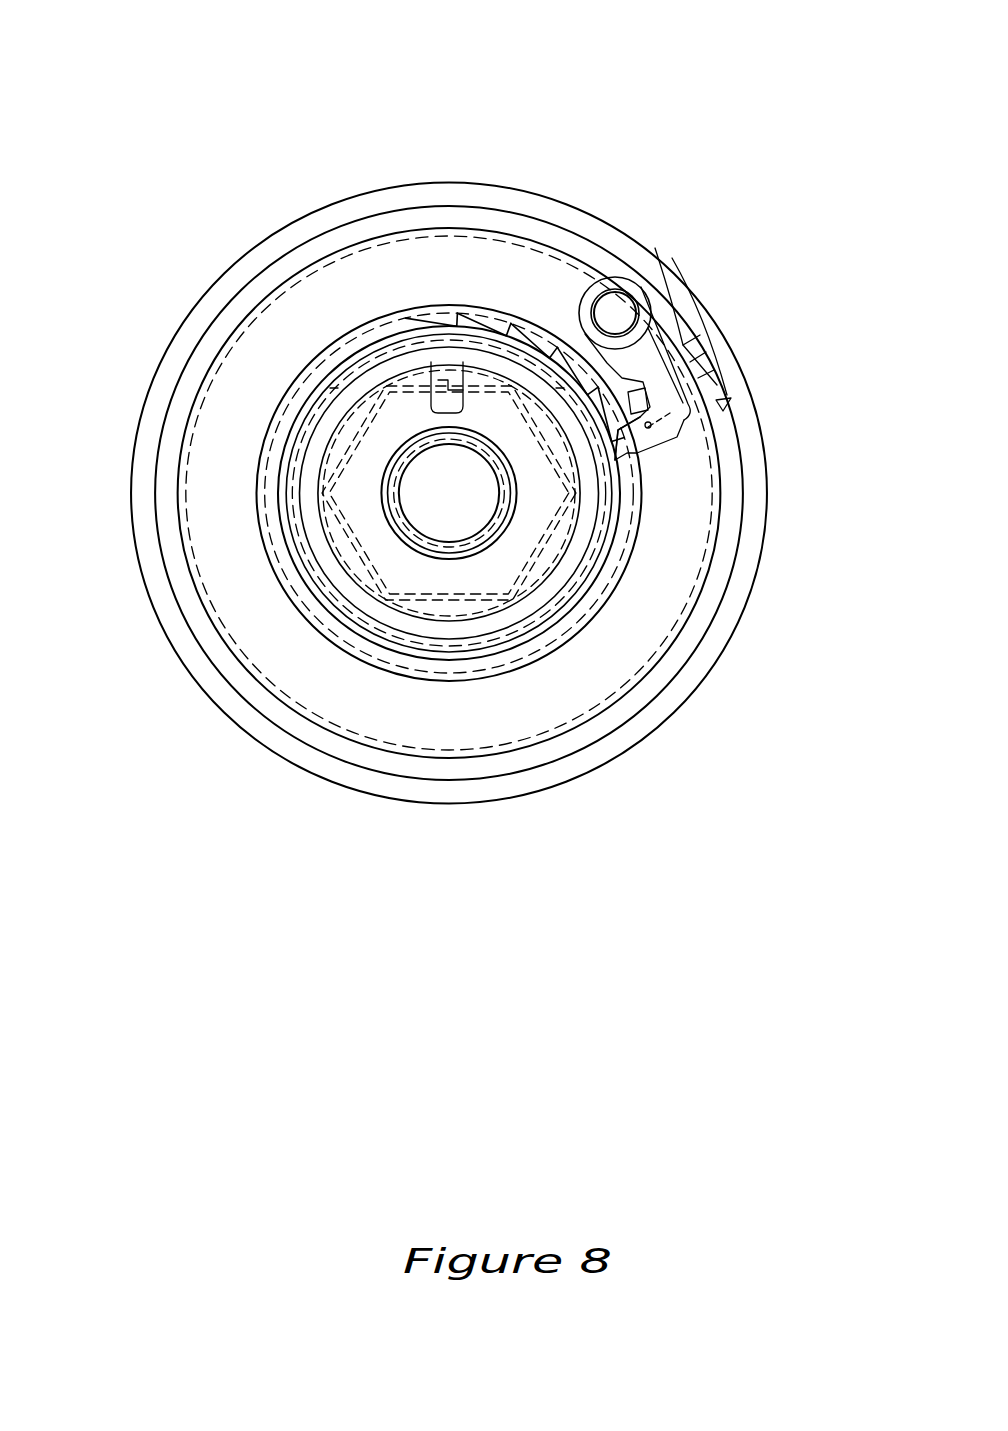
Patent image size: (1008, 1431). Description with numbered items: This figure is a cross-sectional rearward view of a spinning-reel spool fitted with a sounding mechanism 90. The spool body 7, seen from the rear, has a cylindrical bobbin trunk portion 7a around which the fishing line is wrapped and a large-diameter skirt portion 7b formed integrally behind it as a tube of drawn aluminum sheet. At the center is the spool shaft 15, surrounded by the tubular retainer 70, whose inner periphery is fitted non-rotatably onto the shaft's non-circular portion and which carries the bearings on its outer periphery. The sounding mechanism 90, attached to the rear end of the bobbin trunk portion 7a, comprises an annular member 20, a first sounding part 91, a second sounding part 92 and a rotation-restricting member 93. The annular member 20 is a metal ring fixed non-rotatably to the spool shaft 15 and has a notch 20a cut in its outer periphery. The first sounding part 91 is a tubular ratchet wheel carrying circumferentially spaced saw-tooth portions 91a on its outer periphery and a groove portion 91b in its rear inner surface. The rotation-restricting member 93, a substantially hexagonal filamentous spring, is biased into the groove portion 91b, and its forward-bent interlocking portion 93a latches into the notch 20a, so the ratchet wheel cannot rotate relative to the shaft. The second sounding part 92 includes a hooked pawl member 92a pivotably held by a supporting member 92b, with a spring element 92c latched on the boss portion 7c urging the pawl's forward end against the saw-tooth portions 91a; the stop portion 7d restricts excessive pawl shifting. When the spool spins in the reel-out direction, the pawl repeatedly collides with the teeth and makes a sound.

The spool body 7 is at (582, 150).
The bobbin trunk portion 7a is at (418, 232).
The skirt portion 7b is at (468, 206).
The boss portion 7c is at (714, 362).
The stop portion 7d is at (718, 410).
The spool shaft 15 is at (412, 487).
The annular member 20 is at (380, 427).
The notch 20a is at (397, 377).
The retainer 70 is at (390, 509).
The sounding mechanism 90 is at (618, 302).
The first sounding part 91 is at (357, 333).
The saw-tooth portions 91a is at (408, 326).
The groove portion 91b is at (322, 472).
The second sounding part 92 is at (719, 343).
The hooked pawl member 92a is at (630, 456).
The supporting member 92b is at (648, 286).
The spring element 92c is at (680, 318).
The rotation-restricting member 93 is at (430, 392).
The interlocking portion 93a is at (461, 365).